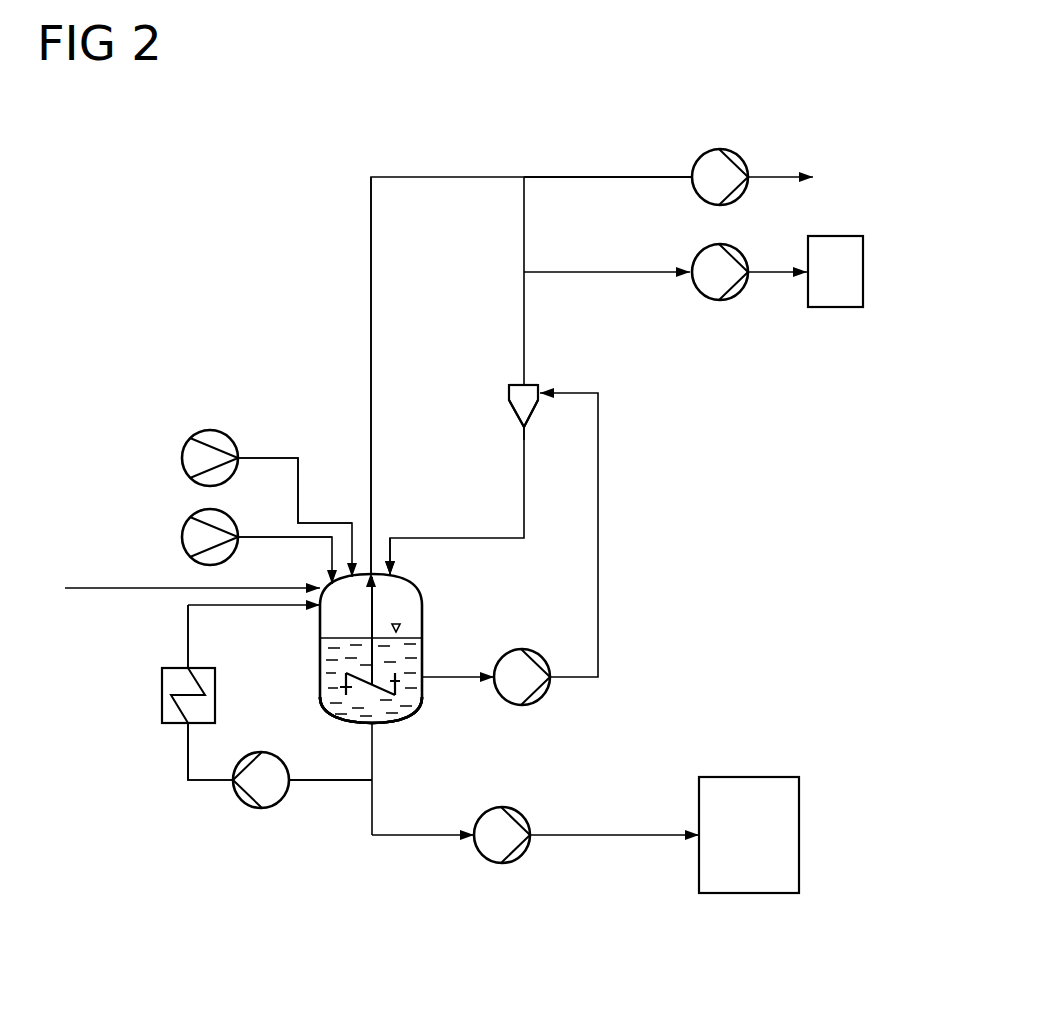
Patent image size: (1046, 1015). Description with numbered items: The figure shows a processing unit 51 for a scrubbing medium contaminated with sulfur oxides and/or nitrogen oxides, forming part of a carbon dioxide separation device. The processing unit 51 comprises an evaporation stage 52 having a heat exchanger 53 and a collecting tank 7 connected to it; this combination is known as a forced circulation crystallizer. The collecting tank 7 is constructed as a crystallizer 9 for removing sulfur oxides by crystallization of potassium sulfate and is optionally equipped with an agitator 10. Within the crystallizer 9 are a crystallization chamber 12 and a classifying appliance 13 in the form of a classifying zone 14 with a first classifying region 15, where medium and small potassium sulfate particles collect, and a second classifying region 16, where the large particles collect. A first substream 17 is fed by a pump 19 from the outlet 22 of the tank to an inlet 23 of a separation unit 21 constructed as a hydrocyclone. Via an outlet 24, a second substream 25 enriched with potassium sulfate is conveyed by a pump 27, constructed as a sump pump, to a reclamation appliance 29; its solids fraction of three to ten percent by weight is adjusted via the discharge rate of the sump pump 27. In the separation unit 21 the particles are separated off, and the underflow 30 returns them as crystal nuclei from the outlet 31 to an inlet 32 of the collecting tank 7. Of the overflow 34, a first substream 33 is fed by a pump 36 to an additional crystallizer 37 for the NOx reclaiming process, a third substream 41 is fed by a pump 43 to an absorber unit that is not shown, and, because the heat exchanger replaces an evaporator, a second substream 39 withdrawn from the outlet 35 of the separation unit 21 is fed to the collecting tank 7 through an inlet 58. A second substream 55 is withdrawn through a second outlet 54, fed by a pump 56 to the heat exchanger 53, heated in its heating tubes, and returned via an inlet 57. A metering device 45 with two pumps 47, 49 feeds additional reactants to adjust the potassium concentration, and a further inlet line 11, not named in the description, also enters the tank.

The collecting tank 7 is at (130, 665).
The crystallizer 9 is at (280, 692).
The agitator 10 is at (345, 683).
The feed line 11 is at (78, 588).
The crystallization chamber 12 is at (412, 605).
The classifying appliance 13 is at (418, 712).
The classifying zone 14 is at (371, 710).
The first classifying region 15 is at (418, 650).
The second classifying region 16 is at (355, 718).
The first substream 17 is at (598, 525).
The pump 19 is at (540, 700).
The separation unit 21 is at (515, 405).
The outlet 22 is at (430, 677).
The inlet 23 is at (545, 385).
The outlet 24 is at (375, 730).
The second substream 25 is at (372, 812).
The pump 27 is at (495, 863).
The reclamation appliance 29 is at (752, 777).
The underflow 30 is at (524, 490).
The outlet 31 is at (522, 428).
The inlet 32 is at (395, 578).
The first substream 33 is at (610, 272).
The overflow 34 is at (524, 325).
The outlet 35 is at (509, 385).
The pump 36 is at (705, 300).
The additional crystallizer 37 is at (838, 307).
The second substream 39 is at (450, 177).
The third substream 41 is at (640, 177).
The pump 43 is at (738, 158).
The metering device 45 is at (150, 468).
The pump 47 is at (210, 430).
The pump 49 is at (180, 527).
The processing unit 51 is at (697, 108).
The evaporation stage 52 is at (318, 278).
The heat exchanger 53 is at (162, 696).
The second outlet 54 is at (372, 785).
The second substream 55 is at (188, 750).
The pump 56 is at (245, 800).
The inlet 57 is at (318, 606).
The inlet 58 is at (372, 570).